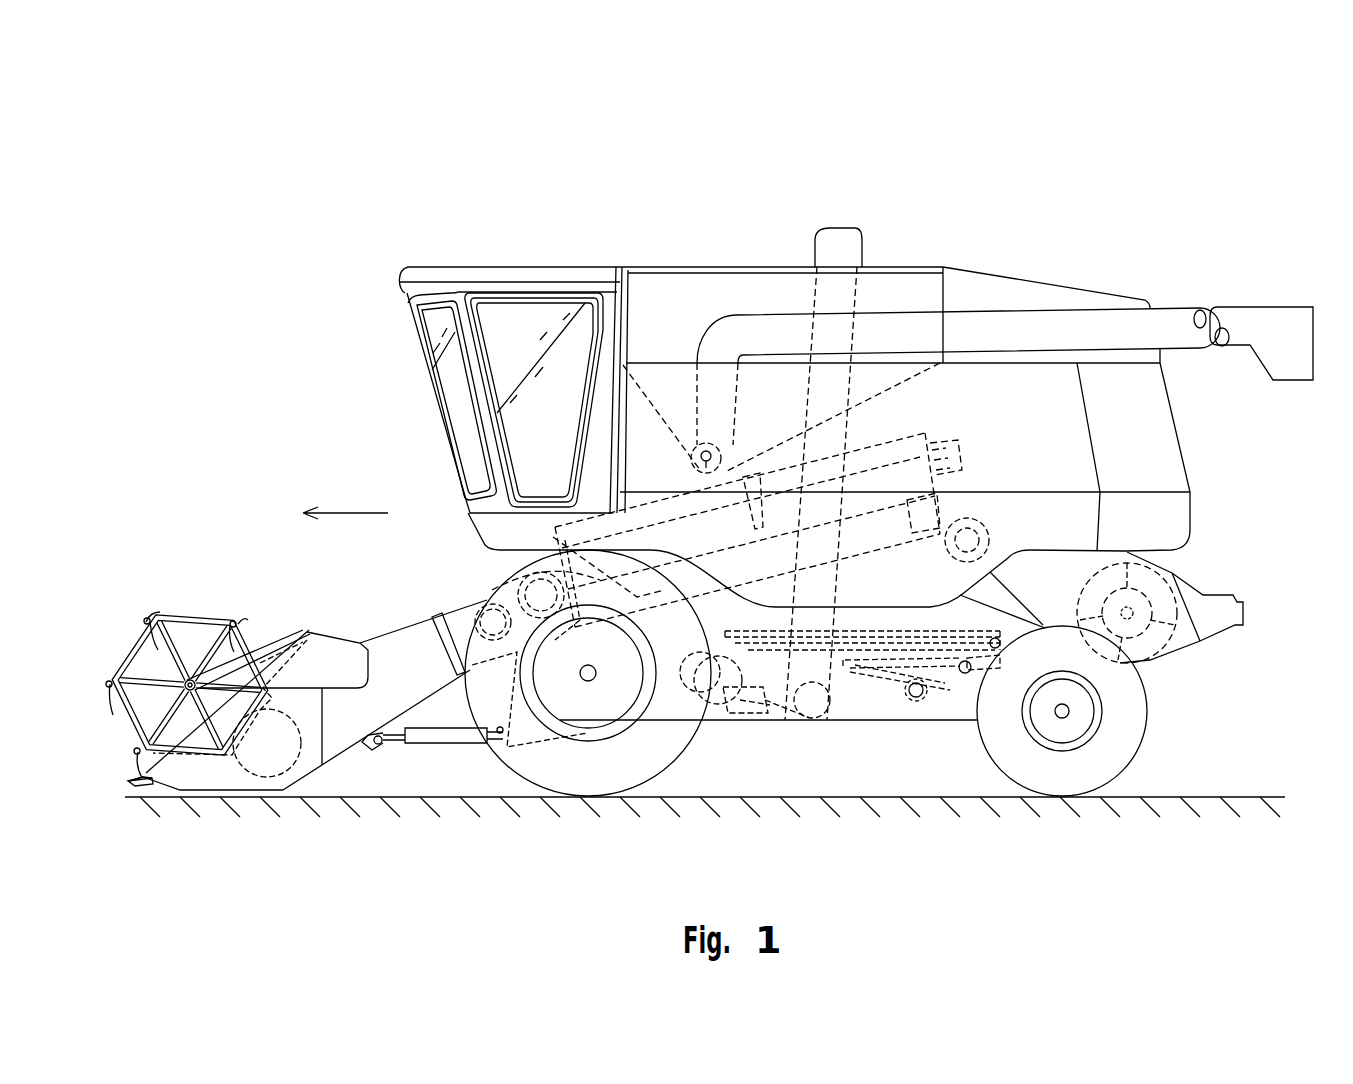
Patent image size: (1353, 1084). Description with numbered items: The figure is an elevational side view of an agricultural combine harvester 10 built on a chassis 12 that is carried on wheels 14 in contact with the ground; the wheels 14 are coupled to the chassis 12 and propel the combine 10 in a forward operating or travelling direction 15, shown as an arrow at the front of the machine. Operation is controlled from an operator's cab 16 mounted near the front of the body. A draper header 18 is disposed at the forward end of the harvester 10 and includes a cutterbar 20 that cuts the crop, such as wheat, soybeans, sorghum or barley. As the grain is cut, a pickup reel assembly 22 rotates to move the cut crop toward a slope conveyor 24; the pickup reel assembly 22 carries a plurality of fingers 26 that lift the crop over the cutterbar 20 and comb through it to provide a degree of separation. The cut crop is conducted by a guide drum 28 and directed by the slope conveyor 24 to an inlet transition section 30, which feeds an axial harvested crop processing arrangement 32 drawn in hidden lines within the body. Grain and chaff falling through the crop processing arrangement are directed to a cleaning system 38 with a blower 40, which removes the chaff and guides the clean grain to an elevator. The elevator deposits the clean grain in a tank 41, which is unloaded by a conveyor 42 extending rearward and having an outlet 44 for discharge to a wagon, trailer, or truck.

The agricultural combine harvester 10 is at (913, 158).
The chassis 12 is at (950, 708).
The wheels 14 is at (577, 765).
The forward operating or travelling direction 15 is at (350, 511).
The operator's cab 16 is at (498, 283).
The draper header 18 is at (227, 697).
The cutterbar 20 is at (150, 790).
The pickup reel assembly 22 is at (212, 602).
The slope conveyor 24 is at (340, 720).
The fingers 26 is at (150, 640).
The guide drum 28 is at (490, 590).
The inlet transition section 30 is at (560, 568).
The axial harvested crop processing arrangement 32 is at (922, 425).
The cleaning system 38 is at (863, 698).
The blower 40 is at (725, 695).
The tank 41 is at (670, 292).
The conveyor 42 is at (1115, 325).
The outlet 44 is at (1295, 365).